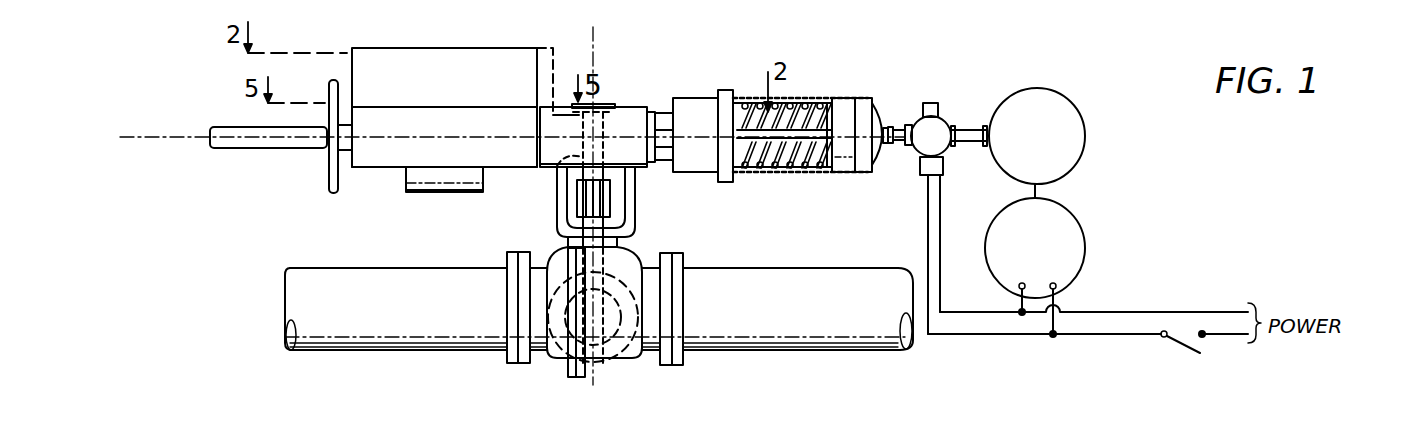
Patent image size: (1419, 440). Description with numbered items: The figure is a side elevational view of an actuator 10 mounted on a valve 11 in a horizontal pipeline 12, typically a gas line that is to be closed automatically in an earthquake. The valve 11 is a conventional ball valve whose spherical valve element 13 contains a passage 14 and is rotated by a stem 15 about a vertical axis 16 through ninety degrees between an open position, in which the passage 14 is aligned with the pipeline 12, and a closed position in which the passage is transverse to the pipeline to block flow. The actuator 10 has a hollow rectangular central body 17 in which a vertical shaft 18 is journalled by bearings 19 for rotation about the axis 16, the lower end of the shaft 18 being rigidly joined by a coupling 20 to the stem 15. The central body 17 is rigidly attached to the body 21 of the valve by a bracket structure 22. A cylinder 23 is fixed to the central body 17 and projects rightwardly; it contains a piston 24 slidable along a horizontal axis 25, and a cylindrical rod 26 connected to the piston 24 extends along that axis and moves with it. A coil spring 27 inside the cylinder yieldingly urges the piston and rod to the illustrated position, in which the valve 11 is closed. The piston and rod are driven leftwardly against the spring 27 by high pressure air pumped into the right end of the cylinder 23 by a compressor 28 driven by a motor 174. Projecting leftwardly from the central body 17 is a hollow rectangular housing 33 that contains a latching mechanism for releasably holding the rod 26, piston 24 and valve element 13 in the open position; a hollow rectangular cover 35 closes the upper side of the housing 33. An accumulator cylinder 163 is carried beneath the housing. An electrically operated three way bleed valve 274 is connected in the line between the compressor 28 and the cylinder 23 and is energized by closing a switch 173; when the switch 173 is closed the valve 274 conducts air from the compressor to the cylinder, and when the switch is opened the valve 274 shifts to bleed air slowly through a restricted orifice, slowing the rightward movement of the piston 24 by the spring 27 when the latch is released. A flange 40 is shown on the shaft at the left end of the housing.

The actuator 10 is at (660, 79).
The valve 11 is at (634, 364).
The pipeline 12 is at (762, 342).
The spherical valve element 13 is at (557, 353).
The passage 14 is at (608, 352).
The stem 15 is at (610, 218).
The vertical axis 16 is at (593, 45).
The central body 17 is at (631, 106).
The vertical shaft 18 is at (575, 118).
The bearings 19 is at (556, 166).
The coupling 20 is at (610, 195).
The valve body 21 is at (557, 260).
The bracket structure 22 is at (557, 205).
The cylinder 23 is at (813, 98).
The piston 24 is at (846, 98).
The horizontal axis 25 is at (695, 140).
The cylindrical rod 26 is at (820, 173).
The coil spring 27 is at (777, 172).
The compressor 28 is at (1088, 110).
The housing 33 is at (381, 159).
The cover 35 is at (444, 107).
The handwheel flange 40 is at (331, 182).
The accumulator cylinder 163 is at (450, 191).
The switch 173 is at (1188, 353).
The motor 174 is at (1070, 225).
The three way bleed valve 274 is at (940, 120).